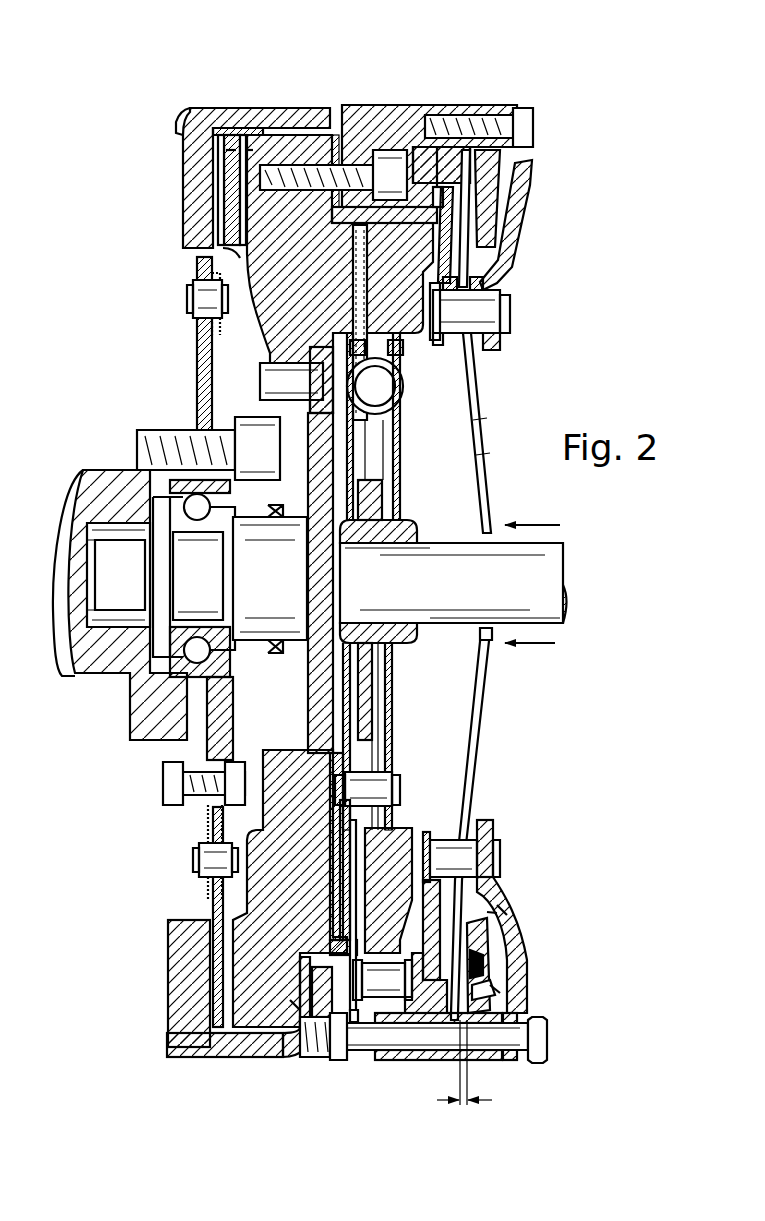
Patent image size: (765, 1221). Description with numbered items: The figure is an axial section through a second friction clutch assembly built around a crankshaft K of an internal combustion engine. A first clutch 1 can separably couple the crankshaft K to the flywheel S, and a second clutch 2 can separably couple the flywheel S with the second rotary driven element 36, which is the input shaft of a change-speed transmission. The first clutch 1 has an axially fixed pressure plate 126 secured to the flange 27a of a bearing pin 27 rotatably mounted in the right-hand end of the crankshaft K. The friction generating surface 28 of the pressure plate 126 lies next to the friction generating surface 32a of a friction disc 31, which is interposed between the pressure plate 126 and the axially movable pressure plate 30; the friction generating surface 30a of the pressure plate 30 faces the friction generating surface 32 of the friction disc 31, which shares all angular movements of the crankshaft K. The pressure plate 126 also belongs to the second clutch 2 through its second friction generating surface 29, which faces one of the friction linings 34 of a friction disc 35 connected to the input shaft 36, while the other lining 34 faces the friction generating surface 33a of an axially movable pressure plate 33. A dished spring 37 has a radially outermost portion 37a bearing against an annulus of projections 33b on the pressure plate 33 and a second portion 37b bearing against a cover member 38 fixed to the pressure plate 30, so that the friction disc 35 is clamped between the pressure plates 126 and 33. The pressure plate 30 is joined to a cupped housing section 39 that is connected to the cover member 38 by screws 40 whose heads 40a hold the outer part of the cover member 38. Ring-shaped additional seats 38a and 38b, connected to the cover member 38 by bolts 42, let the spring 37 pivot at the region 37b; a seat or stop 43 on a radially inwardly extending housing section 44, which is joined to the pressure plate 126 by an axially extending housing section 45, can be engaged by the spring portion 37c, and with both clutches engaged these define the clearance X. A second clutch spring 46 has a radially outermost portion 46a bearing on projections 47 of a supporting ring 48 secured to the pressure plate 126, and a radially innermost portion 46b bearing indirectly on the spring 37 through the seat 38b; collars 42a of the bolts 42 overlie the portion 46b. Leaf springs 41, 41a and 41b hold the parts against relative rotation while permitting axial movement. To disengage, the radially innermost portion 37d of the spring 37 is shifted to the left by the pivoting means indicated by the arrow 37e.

The first clutch 1 is at (243, 57).
The second clutch 2 is at (436, 59).
The bearing pin 27 is at (249, 600).
The flange of the bearing pin 27a is at (313, 687).
The friction generating surface 28 is at (236, 238).
The second friction generating surface 29 is at (420, 1000).
The axially movable pressure plate 30 is at (195, 156).
The friction generating surface 30a is at (235, 147).
The friction disc 31 is at (195, 372).
The friction generating surface 32 is at (216, 196).
The friction generating surface 32a is at (253, 150).
The axially movable pressure plate 33 is at (395, 853).
The friction generating surface 33a is at (343, 903).
The projections or lobes 33b is at (428, 1010).
The friction linings 34 is at (372, 830).
The friction disc 35 is at (405, 497).
The second rotary driven element 36 is at (555, 567).
The dished spring 37 is at (480, 403).
The radially outermost portion 37a is at (470, 1030).
The second portion 37b is at (473, 868).
The spring surface portion 37c is at (470, 960).
The radially innermost portion 37d is at (474, 636).
The pivoting means 37e is at (546, 590).
The cover member 38 is at (497, 888).
The additional seat 38a is at (507, 912).
The additional seat 38b is at (497, 913).
The cupped housing section 39 is at (255, 1058).
The screws 40 is at (357, 1062).
The heads of the screws 40a is at (548, 1053).
The leaf springs 41 is at (232, 345).
The leaf springs 41a is at (357, 1040).
The leaf springs 41b is at (500, 993).
The bolts 42 is at (460, 852).
The collars or flanges of the bolts 42a is at (432, 833).
The seat or stop 43 is at (490, 930).
The radially inwardly extending housing section 44 is at (510, 268).
The axially extending housing section 45 is at (385, 128).
The second clutch spring 46 is at (480, 997).
The radially outermost portion 46a is at (447, 203).
The radially innermost portion 46b is at (480, 281).
The projections 47 is at (440, 213).
The supporting ring 48 is at (303, 1047).
The axially fixed pressure plate 126 is at (248, 970).
The crankshaft K is at (27, 593).
The flywheel S is at (303, 1106).
The clearance X is at (464, 1075).